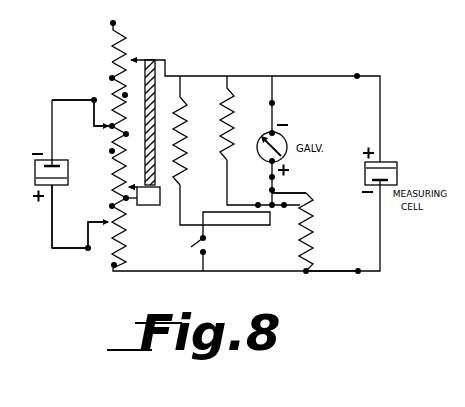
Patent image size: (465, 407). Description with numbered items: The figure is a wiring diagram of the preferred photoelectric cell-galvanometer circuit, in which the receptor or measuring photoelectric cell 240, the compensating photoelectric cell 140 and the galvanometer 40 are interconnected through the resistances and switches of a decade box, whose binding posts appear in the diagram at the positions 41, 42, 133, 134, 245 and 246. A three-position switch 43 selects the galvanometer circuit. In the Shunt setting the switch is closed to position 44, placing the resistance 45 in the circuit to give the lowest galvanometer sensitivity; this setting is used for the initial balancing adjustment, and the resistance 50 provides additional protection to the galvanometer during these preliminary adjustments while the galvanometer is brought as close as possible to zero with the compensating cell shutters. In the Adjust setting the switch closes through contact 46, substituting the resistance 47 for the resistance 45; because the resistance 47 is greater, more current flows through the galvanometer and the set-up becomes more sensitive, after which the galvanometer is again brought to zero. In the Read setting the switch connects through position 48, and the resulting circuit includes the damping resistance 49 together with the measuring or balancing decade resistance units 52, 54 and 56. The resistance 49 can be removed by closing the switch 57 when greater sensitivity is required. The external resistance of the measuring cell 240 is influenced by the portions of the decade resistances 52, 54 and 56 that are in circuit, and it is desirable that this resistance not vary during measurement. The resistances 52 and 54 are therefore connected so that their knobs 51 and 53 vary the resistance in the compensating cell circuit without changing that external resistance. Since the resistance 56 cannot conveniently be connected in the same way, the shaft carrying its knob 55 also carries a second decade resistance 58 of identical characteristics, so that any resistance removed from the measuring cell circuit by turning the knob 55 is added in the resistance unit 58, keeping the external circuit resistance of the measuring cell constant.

The second decade resistance 58 is at (127, 38).
The knob 53 is at (100, 122).
The decade resistance unit 54 is at (121, 132).
The decade resistance unit 56 is at (116, 183).
The decade resistance unit 52 is at (127, 241).
The binding post 133 is at (92, 99).
The binding post 134 is at (86, 251).
The compensating photoelectric cell 140 is at (36, 184).
The knob 51 is at (96, 232).
The knob 55 is at (139, 206).
The switch 57 is at (192, 246).
The switch position (Shunt) 44 is at (256, 209).
The switch position (Adjust) contact 46 is at (270, 209).
The resistance 47 is at (184, 96).
The resistance 45 is at (231, 92).
The binding post 41 is at (276, 104).
The galvanometer 40 is at (283, 138).
The binding post 42 is at (269, 178).
The switch 43 is at (283, 193).
The switch position (Read) 48 is at (314, 200).
The resistance 50 is at (313, 233).
The resistance 49 is at (300, 255).
The binding post 245 is at (360, 76).
The binding post 246 is at (359, 274).
The receptor photoelectric cell 240 is at (396, 176).